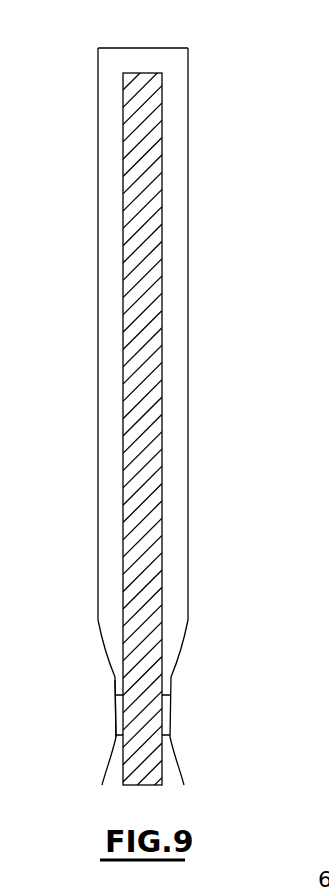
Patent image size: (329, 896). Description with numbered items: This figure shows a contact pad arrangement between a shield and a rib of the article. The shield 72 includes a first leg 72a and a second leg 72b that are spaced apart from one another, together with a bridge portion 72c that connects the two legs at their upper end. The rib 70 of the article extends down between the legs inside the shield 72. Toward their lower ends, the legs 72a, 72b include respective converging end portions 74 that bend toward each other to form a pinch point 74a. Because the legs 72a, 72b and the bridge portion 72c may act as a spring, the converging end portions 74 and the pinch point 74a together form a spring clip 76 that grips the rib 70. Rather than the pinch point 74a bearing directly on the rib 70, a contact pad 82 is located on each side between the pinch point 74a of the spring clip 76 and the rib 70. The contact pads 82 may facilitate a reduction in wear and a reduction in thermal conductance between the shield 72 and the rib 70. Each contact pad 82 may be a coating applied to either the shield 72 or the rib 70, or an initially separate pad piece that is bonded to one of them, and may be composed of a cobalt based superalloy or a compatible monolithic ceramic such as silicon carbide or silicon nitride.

The rib 70 is at (163, 482).
The shield 72 is at (138, 314).
The first leg 72a is at (188, 147).
The second leg 72b is at (98, 197).
The bridge portion 72c is at (140, 48).
The converging end portions 74 is at (88, 652).
The pinch point 74a is at (97, 742).
The spring clip 76 is at (171, 708).
The contact pad 82 is at (115, 695).